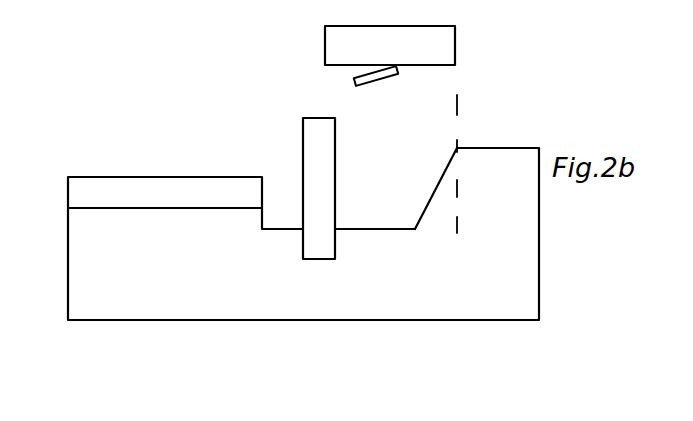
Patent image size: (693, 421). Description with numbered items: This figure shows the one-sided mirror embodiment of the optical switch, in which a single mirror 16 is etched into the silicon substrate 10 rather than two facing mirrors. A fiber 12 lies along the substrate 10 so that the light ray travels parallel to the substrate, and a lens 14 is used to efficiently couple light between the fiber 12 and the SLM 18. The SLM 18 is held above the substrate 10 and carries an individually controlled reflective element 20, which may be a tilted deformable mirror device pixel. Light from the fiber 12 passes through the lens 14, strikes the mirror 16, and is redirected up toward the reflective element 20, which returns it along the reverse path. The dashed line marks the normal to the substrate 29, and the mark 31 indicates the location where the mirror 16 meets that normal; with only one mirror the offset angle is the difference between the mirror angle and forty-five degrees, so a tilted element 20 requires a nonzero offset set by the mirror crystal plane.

The silicon substrate 10 is at (466, 289).
The fiber 12 is at (191, 192).
The lens 14 is at (320, 118).
The mirror 16 is at (455, 204).
The SLM 18 is at (455, 45).
The reflective element 20 is at (353, 82).
The normal to the substrate 29 is at (459, 103).
The axis position 31 is at (457, 198).